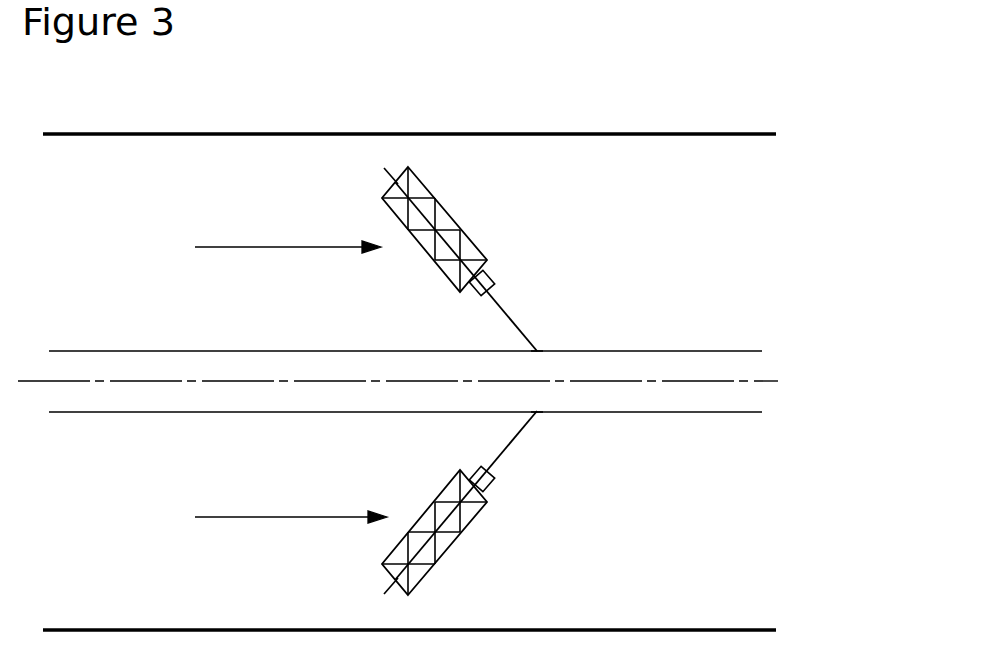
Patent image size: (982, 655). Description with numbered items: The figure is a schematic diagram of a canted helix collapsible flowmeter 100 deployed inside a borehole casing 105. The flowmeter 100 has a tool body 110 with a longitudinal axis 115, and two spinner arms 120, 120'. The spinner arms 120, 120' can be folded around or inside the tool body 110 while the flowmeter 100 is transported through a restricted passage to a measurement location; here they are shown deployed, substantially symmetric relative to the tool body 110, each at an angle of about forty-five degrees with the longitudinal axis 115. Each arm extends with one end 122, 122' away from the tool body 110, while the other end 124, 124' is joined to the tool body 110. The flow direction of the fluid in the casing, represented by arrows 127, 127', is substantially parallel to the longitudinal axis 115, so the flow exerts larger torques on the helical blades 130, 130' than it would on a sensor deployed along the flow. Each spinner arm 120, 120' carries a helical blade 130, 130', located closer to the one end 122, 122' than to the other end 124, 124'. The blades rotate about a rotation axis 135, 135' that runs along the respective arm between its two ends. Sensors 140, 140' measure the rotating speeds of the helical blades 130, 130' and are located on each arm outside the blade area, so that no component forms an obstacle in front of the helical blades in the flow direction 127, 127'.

The canted helix collapsible flowmeter 100 is at (642, 303).
The borehole casing 105 is at (598, 133).
The tool body 110 is at (118, 351).
The longitudinal axis 115 is at (37, 381).
The spinner arm 120 is at (492, 266).
The one end of spinner arm 122 is at (350, 179).
The other end of spinner arm 124 is at (553, 322).
The arrow representing flow direction 127 is at (277, 235).
The helical blade 130 is at (460, 229).
The rotation axis 135 is at (434, 241).
The sensor 140 is at (469, 305).
The spinner arm 120' is at (493, 495).
The one end of spinner arm 122' is at (348, 589).
The other end of spinner arm 124' is at (557, 444).
The arrow representing flow direction 127' is at (280, 506).
The helical blade 130' is at (460, 532).
The rotation axis 135' is at (434, 531).
The sensor 140' is at (479, 458).